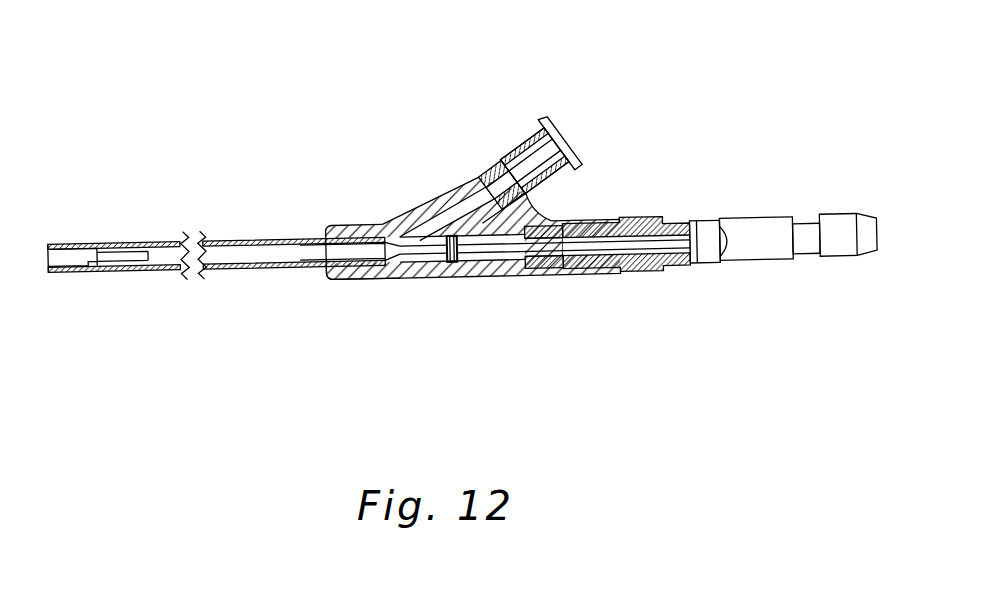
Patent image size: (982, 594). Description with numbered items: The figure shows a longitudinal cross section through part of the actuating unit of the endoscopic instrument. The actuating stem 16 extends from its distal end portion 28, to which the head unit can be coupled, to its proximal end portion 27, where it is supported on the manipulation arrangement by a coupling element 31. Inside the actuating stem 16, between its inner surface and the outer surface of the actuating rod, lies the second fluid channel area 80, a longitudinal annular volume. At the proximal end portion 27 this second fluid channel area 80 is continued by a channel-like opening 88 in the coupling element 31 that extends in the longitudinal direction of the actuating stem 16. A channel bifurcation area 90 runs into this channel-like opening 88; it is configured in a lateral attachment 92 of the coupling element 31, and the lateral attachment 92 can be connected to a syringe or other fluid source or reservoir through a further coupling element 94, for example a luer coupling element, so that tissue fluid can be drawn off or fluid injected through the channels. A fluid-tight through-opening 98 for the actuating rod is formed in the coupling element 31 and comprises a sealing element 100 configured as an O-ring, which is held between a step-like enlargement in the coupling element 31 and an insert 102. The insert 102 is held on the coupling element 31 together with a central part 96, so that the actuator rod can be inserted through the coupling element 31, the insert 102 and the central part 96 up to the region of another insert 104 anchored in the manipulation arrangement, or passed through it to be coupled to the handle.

The actuating stem 16 is at (170, 240).
The proximal end portion 27 is at (294, 205).
The distal end portion 28 is at (71, 224).
The coupling element 31 is at (354, 289).
The second fluid channel area 80 is at (308, 240).
The channel-like opening 88 is at (390, 278).
The channel bifurcation area 90 is at (460, 212).
The lateral attachment 92 is at (418, 200).
The coupling element 94 is at (533, 135).
The central part 96 is at (643, 217).
The fluid-tight through-opening 98 is at (498, 291).
The sealing element 100 is at (435, 278).
The insert 102 is at (538, 270).
The insert 104 is at (723, 222).